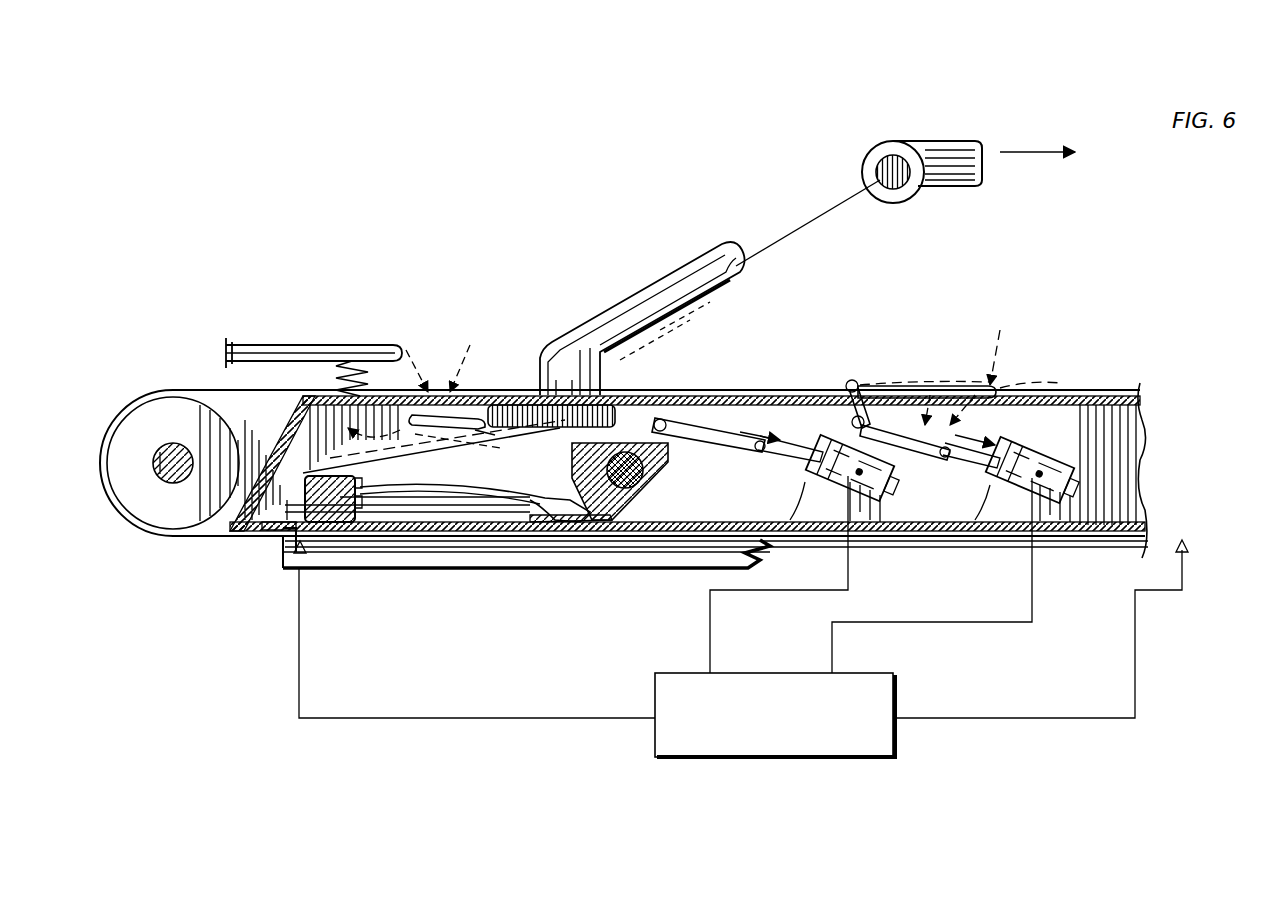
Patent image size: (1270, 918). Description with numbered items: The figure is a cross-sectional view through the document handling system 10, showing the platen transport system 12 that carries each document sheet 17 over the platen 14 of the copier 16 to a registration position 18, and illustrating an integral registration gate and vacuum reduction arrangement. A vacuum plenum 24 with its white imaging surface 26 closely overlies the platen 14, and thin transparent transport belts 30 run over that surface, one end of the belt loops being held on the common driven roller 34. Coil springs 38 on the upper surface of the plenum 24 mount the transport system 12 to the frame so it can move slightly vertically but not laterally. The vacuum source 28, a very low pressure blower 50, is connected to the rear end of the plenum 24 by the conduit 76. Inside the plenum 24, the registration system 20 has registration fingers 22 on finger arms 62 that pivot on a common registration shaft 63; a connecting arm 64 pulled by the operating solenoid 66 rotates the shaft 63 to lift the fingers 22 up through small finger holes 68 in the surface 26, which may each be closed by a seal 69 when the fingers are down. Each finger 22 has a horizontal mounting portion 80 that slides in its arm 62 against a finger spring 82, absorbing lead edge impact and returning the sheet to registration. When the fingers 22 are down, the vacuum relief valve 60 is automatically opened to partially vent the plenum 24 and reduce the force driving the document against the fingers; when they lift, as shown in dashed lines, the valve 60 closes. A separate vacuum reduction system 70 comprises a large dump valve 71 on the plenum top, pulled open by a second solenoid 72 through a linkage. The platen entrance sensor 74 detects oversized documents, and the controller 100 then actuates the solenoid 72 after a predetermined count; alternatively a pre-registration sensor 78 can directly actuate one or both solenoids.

The document handling system 10 is at (290, 346).
The platen transport system 12 is at (765, 368).
The platen 14 is at (600, 552).
The copier 16 is at (640, 698).
The document sheet 17 is at (396, 566).
The registration position 18 is at (285, 552).
The registration system 20 is at (350, 424).
The registration fingers 22 is at (290, 540).
The vacuum plenum 24 is at (1073, 420).
The imaging surface 26 is at (968, 533).
The vacuum source 28 is at (848, 160).
The transport belts 30 is at (425, 545).
The common driven roller 34 is at (178, 412).
The coil springs 38 is at (350, 362).
The blower 50 is at (970, 188).
The vacuum relief valve 60 is at (432, 410).
The registration finger arms 62 is at (507, 462).
The registration shaft 63 is at (648, 480).
The connecting arm 64 is at (665, 438).
The operating solenoid 66 is at (808, 472).
The finger holes 68 is at (283, 532).
The seal 69 is at (300, 472).
The vacuum reduction system 70 is at (1022, 425).
The dump valve 71 is at (930, 388).
The second solenoid 72 is at (990, 475).
The platen entrance sensor 74 is at (1186, 542).
The conduit 76 is at (665, 277).
The pre-registration sensor 78 is at (306, 548).
The finger horizontal mounting portion 80 is at (475, 515).
The finger spring 82 is at (548, 495).
The controller 100 is at (895, 688).